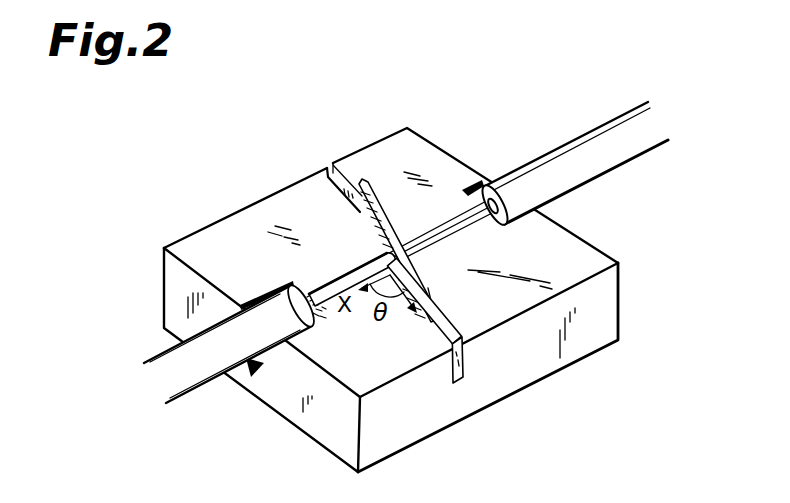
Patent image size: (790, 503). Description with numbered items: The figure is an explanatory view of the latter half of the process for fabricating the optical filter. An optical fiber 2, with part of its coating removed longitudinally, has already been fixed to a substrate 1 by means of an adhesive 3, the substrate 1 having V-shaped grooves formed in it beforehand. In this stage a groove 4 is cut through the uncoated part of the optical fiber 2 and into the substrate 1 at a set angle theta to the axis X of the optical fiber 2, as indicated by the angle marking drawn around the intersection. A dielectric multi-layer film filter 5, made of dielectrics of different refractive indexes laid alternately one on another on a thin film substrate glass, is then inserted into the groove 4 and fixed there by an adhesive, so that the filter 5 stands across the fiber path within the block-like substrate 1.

The substrate 1 is at (603, 295).
The optical fiber 2 is at (618, 156).
The adhesive 3 is at (270, 287).
The groove 4 is at (468, 368).
The dielectric multi-layer film filter 5 is at (438, 290).